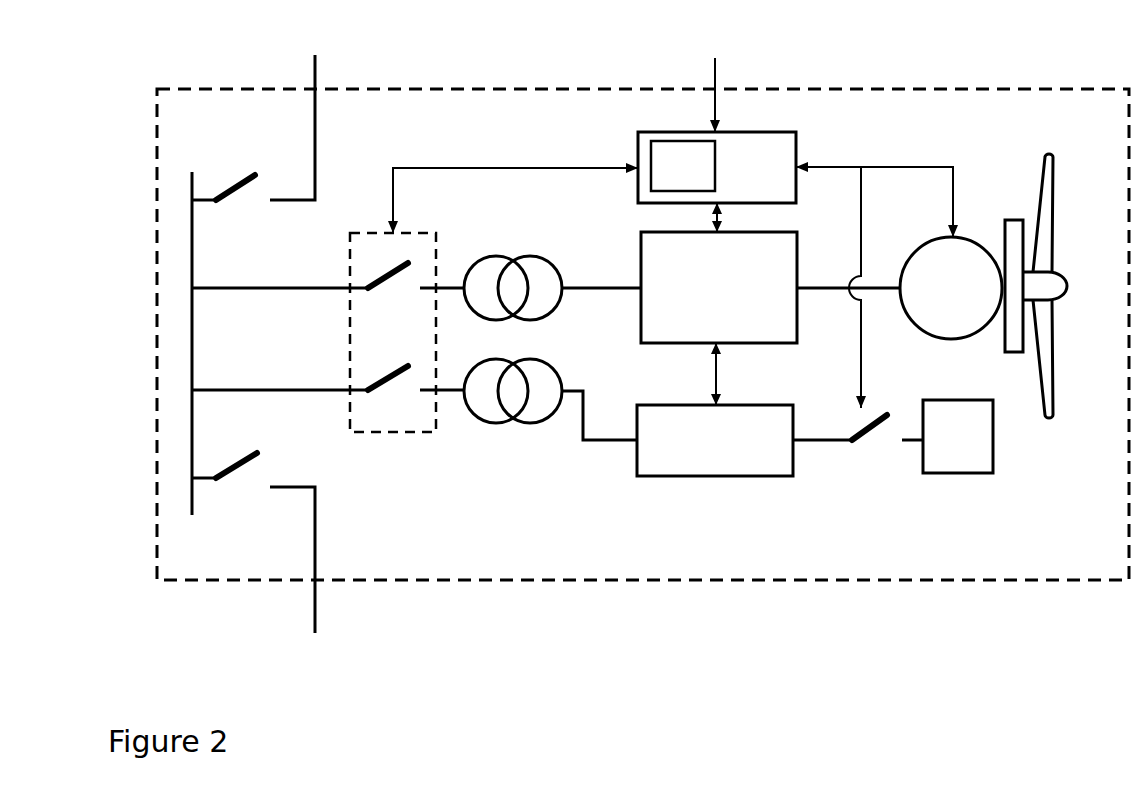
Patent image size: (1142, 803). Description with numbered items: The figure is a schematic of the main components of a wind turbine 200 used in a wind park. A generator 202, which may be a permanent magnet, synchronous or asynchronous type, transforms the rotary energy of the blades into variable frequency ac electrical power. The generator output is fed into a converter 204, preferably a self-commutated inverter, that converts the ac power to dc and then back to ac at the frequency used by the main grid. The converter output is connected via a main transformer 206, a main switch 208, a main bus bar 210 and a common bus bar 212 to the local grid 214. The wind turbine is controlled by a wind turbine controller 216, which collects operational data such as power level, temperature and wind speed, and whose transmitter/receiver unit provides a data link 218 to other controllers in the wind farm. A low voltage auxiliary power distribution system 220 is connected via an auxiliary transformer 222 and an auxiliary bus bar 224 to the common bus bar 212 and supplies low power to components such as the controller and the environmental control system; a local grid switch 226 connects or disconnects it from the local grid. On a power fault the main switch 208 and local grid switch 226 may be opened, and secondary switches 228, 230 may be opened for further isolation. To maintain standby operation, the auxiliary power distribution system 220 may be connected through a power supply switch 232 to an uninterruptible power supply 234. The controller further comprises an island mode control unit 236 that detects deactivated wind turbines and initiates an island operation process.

The wind turbine 200 is at (643, 392).
The generator 202 is at (983, 286).
The converter 204 is at (770, 318).
The main transformer 206 is at (552, 270).
The main switch 208 is at (377, 263).
The main bus bar 210 is at (280, 272).
The common bus bar 212 is at (187, 318).
The local grid 214 is at (325, 356).
The wind turbine controller 216 is at (783, 152).
The data link 218 is at (716, 79).
The low voltage auxiliary power distribution system 220 is at (715, 440).
The auxiliary transformer 222 is at (550, 417).
The auxiliary bus bar 224 is at (280, 373).
The local grid switch 226 is at (392, 403).
The secondary switch 228 is at (228, 170).
The secondary switch 230 is at (229, 495).
The load switch 232 is at (858, 460).
The uninterruptible power supply 234 is at (958, 436).
The island mode control unit 236 is at (683, 166).